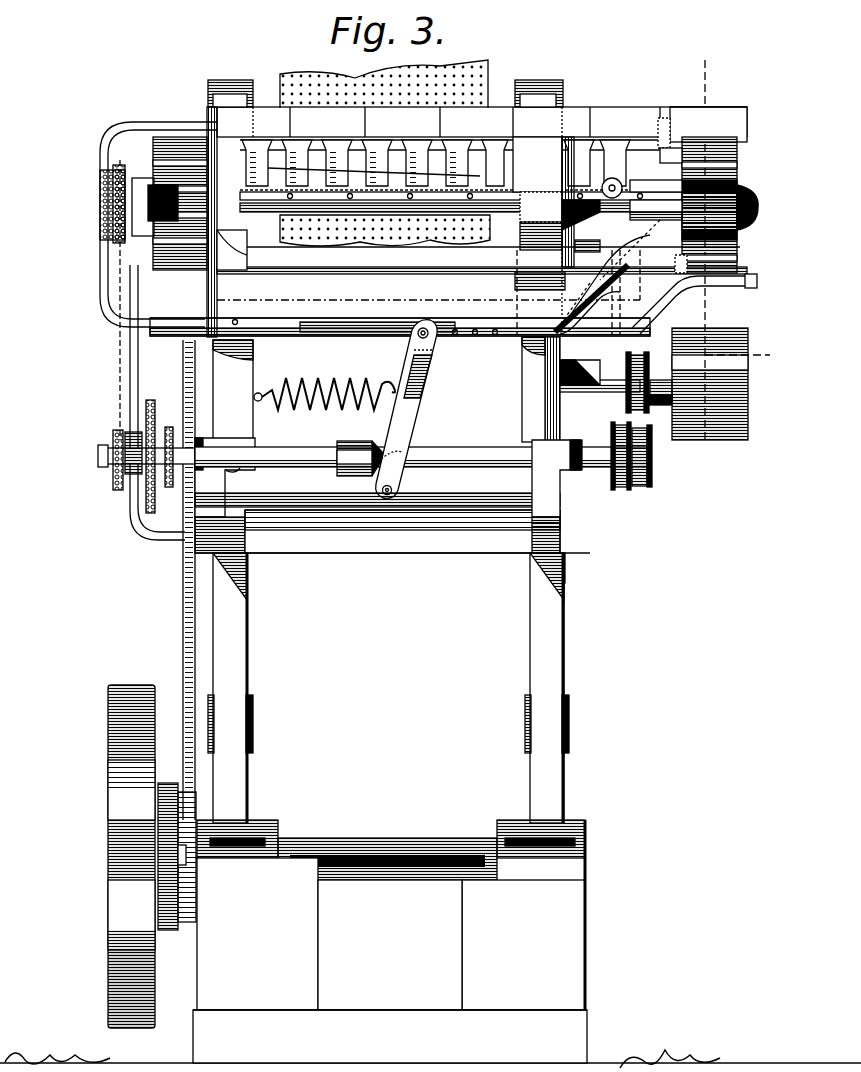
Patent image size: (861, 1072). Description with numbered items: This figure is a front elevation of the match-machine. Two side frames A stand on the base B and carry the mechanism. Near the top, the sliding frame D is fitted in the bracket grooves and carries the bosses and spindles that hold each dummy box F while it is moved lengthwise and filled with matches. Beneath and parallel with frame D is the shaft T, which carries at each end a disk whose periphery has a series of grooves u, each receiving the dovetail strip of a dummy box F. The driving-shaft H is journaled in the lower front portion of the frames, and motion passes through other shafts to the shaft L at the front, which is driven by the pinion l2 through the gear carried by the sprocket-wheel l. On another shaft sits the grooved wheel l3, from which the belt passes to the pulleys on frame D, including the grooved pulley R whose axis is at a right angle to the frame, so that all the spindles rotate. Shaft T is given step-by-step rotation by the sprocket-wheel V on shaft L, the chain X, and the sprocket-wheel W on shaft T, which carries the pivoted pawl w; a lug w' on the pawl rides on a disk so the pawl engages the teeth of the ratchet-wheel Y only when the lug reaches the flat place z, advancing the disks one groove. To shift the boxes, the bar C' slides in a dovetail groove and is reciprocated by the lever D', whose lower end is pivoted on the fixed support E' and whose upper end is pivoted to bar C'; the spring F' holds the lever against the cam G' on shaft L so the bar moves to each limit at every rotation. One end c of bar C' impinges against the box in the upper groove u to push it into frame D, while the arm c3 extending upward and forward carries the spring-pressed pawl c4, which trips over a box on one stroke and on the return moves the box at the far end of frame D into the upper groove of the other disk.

The driving-shaft H is at (488, 72).
The dummy box F is at (477, 108).
The frame D is at (460, 149).
The shaft T is at (390, 215).
The bar C' is at (404, 317).
The sprocket-wheel W is at (118, 224).
The ratchet-wheel Y is at (153, 203).
The pawl w is at (136, 168).
The lug w' is at (138, 154).
The chain X is at (118, 396).
The sprocket-wheel V is at (112, 436).
The sprocket-wheel l is at (168, 425).
The pinion l2 is at (186, 430).
The shaft L is at (450, 455).
The cam G' is at (364, 444).
The spring F' is at (324, 406).
The lever D' is at (415, 409).
The fixed support E' is at (392, 522).
The grooved wheel l3 is at (622, 498).
The flat place z is at (716, 246).
The spring-pressed pawl c4 is at (672, 125).
The grooves u is at (740, 183).
The cylinder ring v' is at (748, 156).
The grooved pulley R is at (618, 182).
The end of bar C' c is at (757, 280).
The arm c3 is at (612, 285).
The side frame A is at (242, 648).
The base B is at (390, 941).